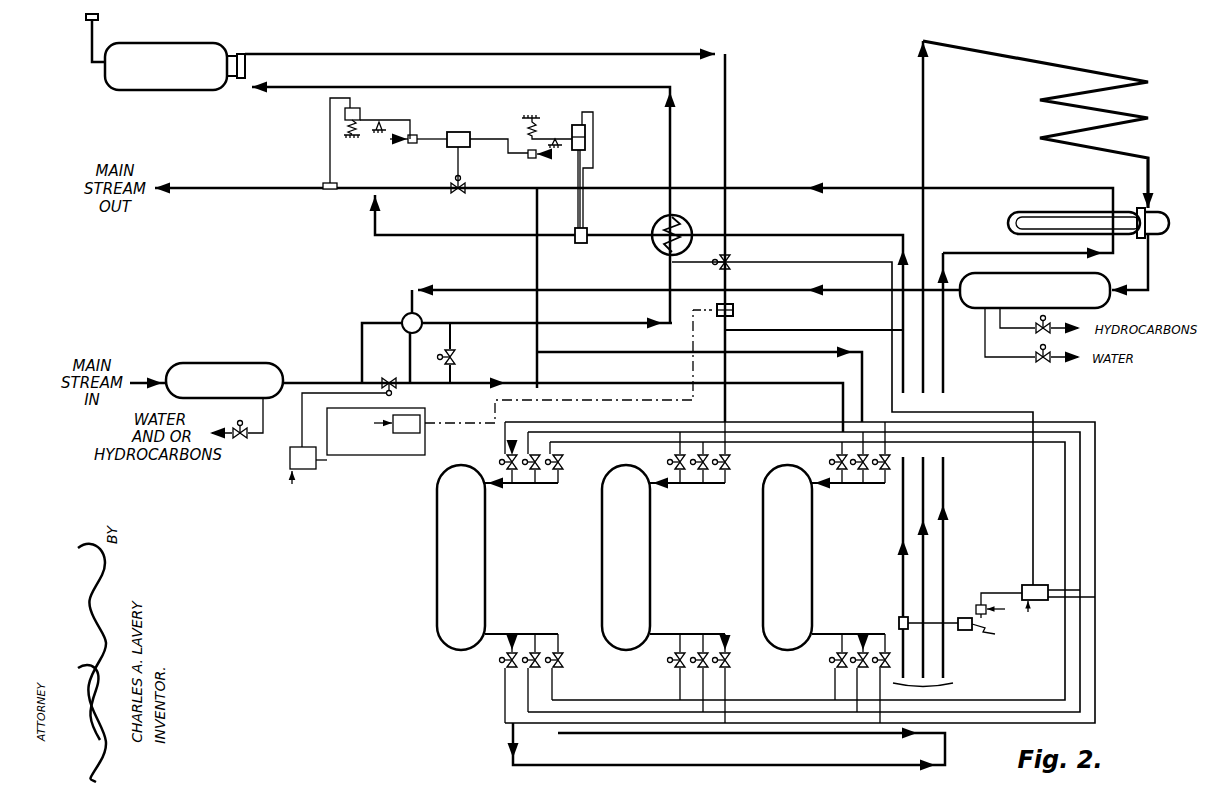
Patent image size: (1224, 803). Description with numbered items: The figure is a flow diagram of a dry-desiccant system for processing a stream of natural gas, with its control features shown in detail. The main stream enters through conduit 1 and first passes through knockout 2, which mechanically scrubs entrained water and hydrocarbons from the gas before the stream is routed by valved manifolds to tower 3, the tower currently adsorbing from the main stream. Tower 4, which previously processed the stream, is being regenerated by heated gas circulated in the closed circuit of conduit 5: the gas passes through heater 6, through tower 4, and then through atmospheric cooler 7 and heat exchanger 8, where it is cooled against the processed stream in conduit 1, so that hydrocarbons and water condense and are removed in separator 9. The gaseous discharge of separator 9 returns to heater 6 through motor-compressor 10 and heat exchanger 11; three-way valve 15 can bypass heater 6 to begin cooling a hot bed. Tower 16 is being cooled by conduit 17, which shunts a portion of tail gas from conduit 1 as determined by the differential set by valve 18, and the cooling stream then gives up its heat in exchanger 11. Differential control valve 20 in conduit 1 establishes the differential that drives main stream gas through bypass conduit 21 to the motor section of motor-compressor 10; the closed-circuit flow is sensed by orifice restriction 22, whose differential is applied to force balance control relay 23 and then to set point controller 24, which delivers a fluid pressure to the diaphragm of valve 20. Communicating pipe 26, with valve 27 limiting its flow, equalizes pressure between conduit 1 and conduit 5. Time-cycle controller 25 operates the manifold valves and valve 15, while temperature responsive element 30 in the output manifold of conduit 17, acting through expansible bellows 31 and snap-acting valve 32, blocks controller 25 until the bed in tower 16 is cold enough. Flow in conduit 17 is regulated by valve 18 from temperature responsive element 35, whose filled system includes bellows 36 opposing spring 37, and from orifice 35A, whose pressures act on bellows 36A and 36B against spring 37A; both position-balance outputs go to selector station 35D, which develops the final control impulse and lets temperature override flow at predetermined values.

The conduit 1 is at (222, 188).
The knockout 2 is at (200, 363).
The tower 3 is at (485, 558).
The tower 4 is at (652, 558).
The conduit 5 is at (430, 290).
The heater 6 is at (185, 92).
The atmospheric cooler 7 is at (1145, 112).
The heat exchanger 8 is at (1182, 202).
The separator 9 is at (1105, 274).
The motor-compressor 10 is at (404, 314).
The heat exchanger 11 is at (660, 252).
The three-way valve 15 is at (738, 258).
The tower 16 is at (812, 558).
The conduit 17 is at (537, 205).
The valve 18 is at (460, 178).
The differential control valve 20 is at (392, 375).
The bypass conduit 21 is at (362, 345).
The restriction 22 is at (740, 312).
The force balance control relay 23 is at (408, 434).
The set point controller 24 is at (316, 470).
The time-cycle controller 25 is at (1026, 585).
The communicating pipe 26 is at (452, 333).
The valve 27 is at (458, 357).
The temperature responsive element 30 is at (903, 612).
The expansible bellows 31 is at (975, 630).
The three-way snap-acting fluid pressure valve 32 is at (975, 610).
The temperature responsive element 35 is at (323, 184).
The orifice 35A is at (587, 243).
The selector station 35D is at (462, 132).
The bellows 36 is at (360, 112).
The bellows 36A is at (586, 126).
The bellows 36B is at (593, 150).
The spring 37 is at (342, 132).
The spring 37A is at (546, 122).